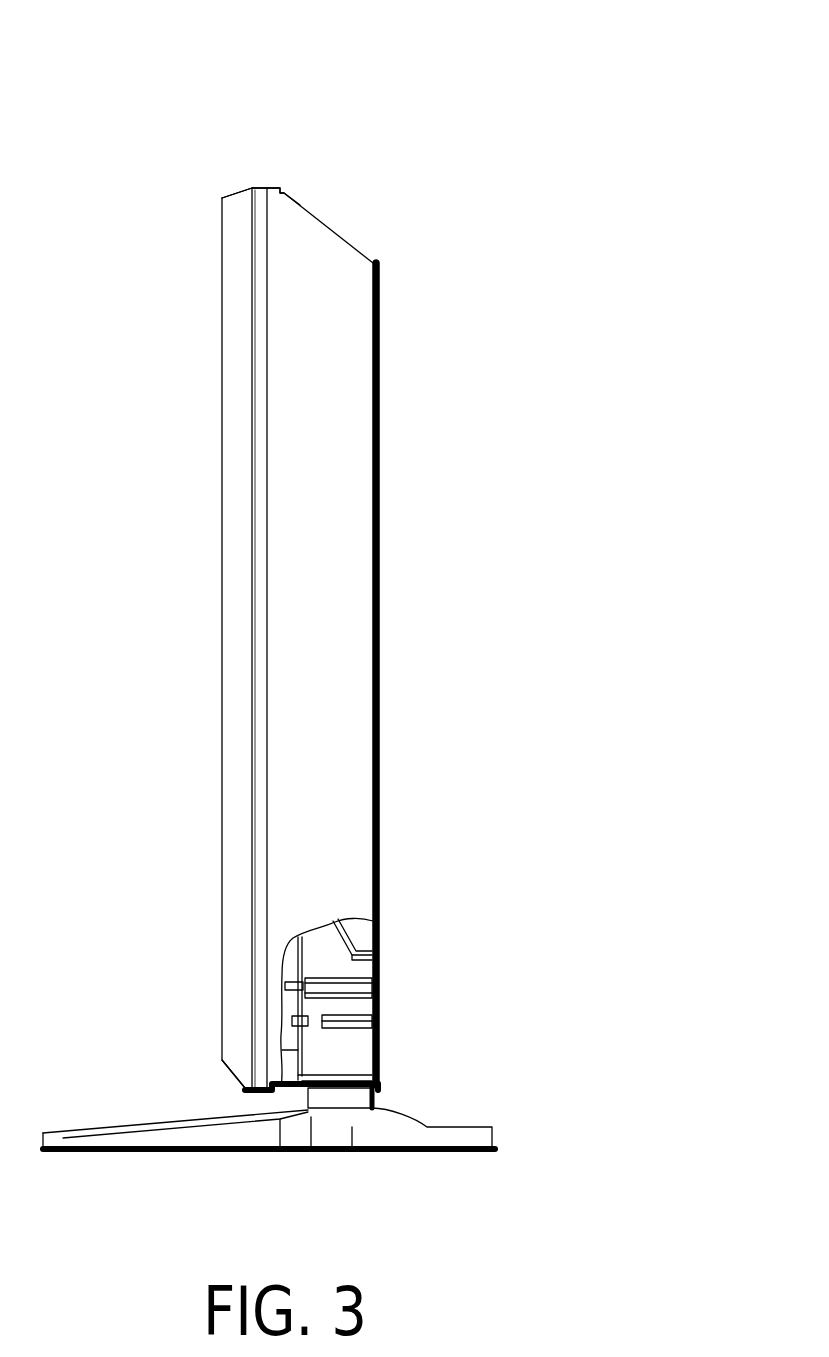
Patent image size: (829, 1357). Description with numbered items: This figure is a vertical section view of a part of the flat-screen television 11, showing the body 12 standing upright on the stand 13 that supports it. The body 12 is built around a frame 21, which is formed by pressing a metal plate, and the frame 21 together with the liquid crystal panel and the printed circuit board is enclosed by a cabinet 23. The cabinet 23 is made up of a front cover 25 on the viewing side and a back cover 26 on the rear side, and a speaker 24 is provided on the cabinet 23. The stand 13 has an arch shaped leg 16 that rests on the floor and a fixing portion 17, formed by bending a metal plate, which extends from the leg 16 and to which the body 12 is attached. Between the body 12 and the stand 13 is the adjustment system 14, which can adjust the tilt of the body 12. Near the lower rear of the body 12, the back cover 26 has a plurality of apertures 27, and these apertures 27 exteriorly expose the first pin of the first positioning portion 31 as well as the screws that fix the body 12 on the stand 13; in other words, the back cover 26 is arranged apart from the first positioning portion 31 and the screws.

The flat-screen television 11 is at (338, 102).
The body 12 is at (172, 214).
The stand 13 is at (102, 1101).
The adjustment system 14 is at (412, 1026).
The leg 16 is at (167, 1140).
The fixing portion 17 is at (381, 1057).
The frame 21 is at (300, 1057).
The cabinet 23 is at (233, 195).
The speaker 24 is at (233, 1070).
The front cover 25 is at (233, 372).
The back cover 26 is at (360, 372).
The apertures 27 is at (378, 1018).
The first positioning portion 31 is at (320, 1052).